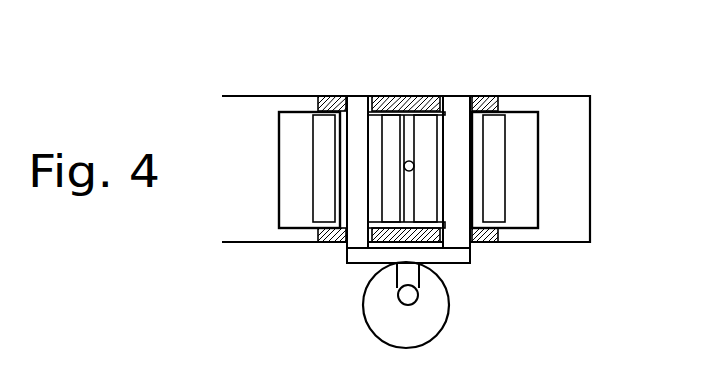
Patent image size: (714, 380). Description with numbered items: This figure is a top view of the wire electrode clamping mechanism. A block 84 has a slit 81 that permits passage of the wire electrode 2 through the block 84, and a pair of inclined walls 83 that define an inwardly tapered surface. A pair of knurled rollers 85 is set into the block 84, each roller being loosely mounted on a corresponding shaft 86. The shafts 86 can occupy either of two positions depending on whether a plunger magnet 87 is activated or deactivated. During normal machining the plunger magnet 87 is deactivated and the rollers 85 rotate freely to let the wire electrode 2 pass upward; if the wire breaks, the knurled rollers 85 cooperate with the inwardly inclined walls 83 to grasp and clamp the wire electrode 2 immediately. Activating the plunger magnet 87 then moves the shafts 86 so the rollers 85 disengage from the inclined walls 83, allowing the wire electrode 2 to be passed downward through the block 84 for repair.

The wire electrode 2 is at (370, 245).
The slit 81 is at (406, 138).
The inclined walls 83 is at (409, 213).
The block 84 is at (437, 169).
The knurled rollers 85 is at (416, 138).
The shafts 86 is at (413, 148).
The plunger magnet 87 is at (436, 305).